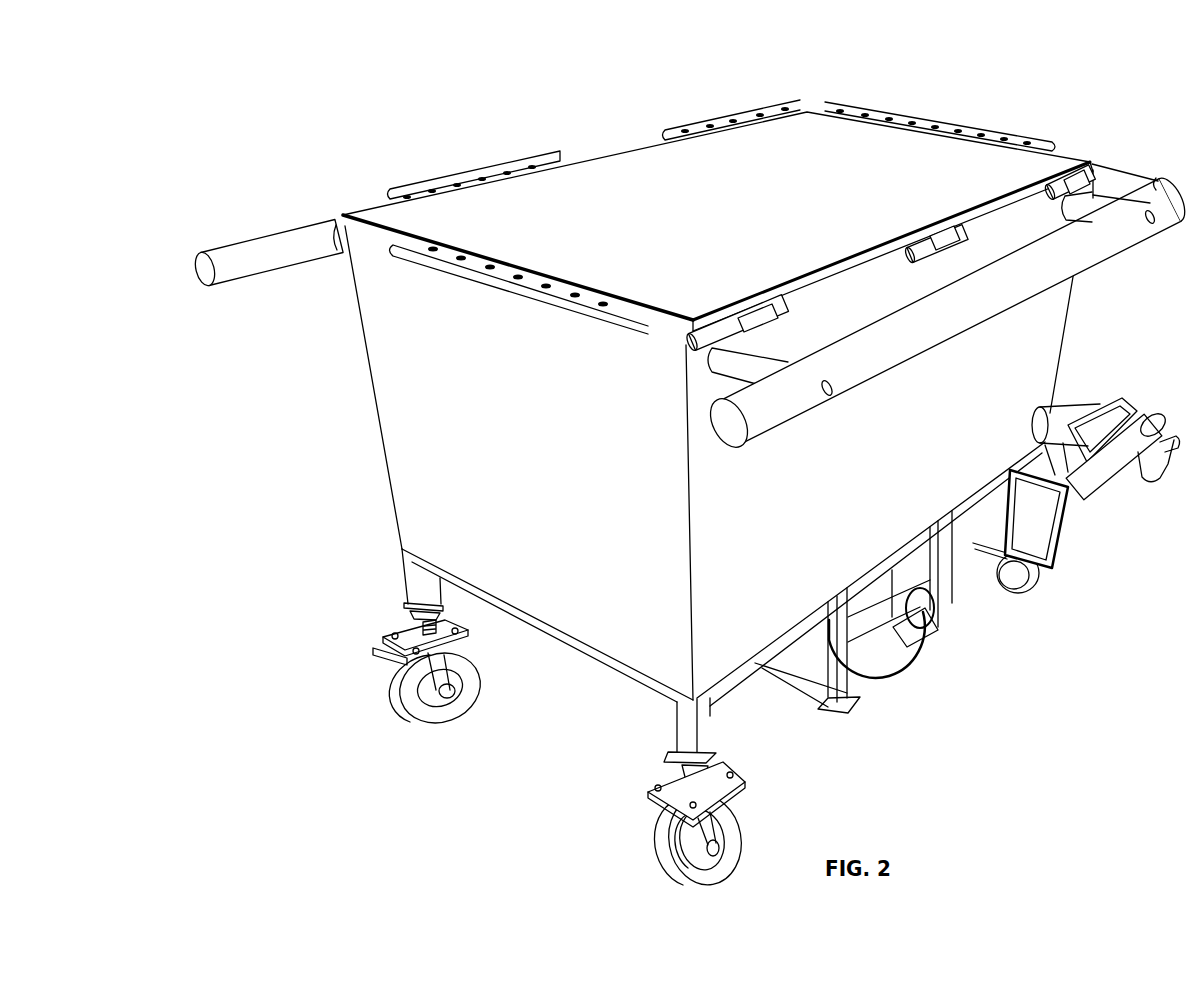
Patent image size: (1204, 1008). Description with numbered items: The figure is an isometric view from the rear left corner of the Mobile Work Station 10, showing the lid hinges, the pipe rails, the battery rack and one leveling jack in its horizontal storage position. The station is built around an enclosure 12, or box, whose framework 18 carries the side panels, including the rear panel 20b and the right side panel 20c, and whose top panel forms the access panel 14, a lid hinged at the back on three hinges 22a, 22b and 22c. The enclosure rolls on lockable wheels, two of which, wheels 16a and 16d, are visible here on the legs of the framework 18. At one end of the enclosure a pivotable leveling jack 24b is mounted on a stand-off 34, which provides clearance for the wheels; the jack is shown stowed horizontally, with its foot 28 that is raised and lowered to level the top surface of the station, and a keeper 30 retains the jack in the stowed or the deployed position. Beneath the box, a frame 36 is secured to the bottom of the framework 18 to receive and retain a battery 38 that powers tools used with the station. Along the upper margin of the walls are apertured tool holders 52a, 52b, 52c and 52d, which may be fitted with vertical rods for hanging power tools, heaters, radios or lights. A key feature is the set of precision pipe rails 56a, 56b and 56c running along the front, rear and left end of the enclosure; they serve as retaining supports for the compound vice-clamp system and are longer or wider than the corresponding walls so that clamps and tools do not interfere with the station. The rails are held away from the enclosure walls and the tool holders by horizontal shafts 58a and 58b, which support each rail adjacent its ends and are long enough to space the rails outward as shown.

The Mobile Work Station 10 is at (688, 495).
The enclosure 12 is at (688, 530).
The access panel 14 is at (718, 217).
The lockable wheel 16a is at (398, 613).
The lockable wheel 16d is at (672, 780).
The framework 18 is at (410, 575).
The rear panel 20b is at (1018, 333).
The right side panel 20c is at (396, 385).
The hinge 22a is at (757, 304).
The hinge 22b is at (940, 227).
The hinge 22c is at (1080, 166).
The pivotable leveling jack 24b is at (1078, 498).
The foot 28 is at (1050, 539).
The latch hook 30 is at (1140, 468).
The stand-off 34 is at (1052, 420).
The frame 36 is at (930, 557).
The battery 38 is at (863, 597).
The apertured tool holder 52a is at (700, 136).
The apertured tool holder 52b is at (447, 186).
The apertured tool holder 52c is at (960, 128).
The apertured tool holder 52d is at (528, 272).
The pipe rail 56a is at (313, 228).
The pipe rail 56b is at (902, 318).
The pipe rail 56c is at (1130, 172).
The horizontal shaft 58a is at (750, 348).
The horizontal shaft 58b is at (1068, 213).